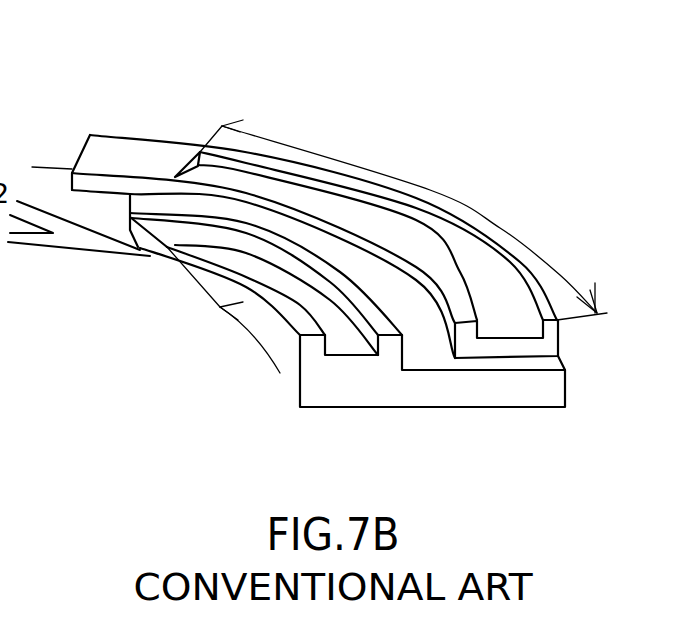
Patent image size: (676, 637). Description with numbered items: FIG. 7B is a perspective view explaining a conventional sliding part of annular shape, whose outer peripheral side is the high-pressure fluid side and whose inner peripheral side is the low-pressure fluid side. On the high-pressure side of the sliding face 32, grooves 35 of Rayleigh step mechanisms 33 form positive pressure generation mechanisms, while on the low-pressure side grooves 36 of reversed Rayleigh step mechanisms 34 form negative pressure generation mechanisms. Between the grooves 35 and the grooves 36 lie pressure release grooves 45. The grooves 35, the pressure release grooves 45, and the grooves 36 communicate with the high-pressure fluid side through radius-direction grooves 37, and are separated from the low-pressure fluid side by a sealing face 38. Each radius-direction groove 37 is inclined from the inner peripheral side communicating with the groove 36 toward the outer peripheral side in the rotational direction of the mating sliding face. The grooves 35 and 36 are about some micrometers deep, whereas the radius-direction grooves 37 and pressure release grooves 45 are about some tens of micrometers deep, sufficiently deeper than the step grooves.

The sliding face 32 is at (145, 152).
The Rayleigh step mechanism 33 is at (392, 218).
The reversed Rayleigh step mechanism 34 is at (235, 313).
The groove 35 is at (487, 307).
The groove 36 is at (352, 342).
The radius-direction groove 37 is at (58, 180).
The sealing face 38 is at (140, 248).
The pressure release groove 45 is at (418, 338).